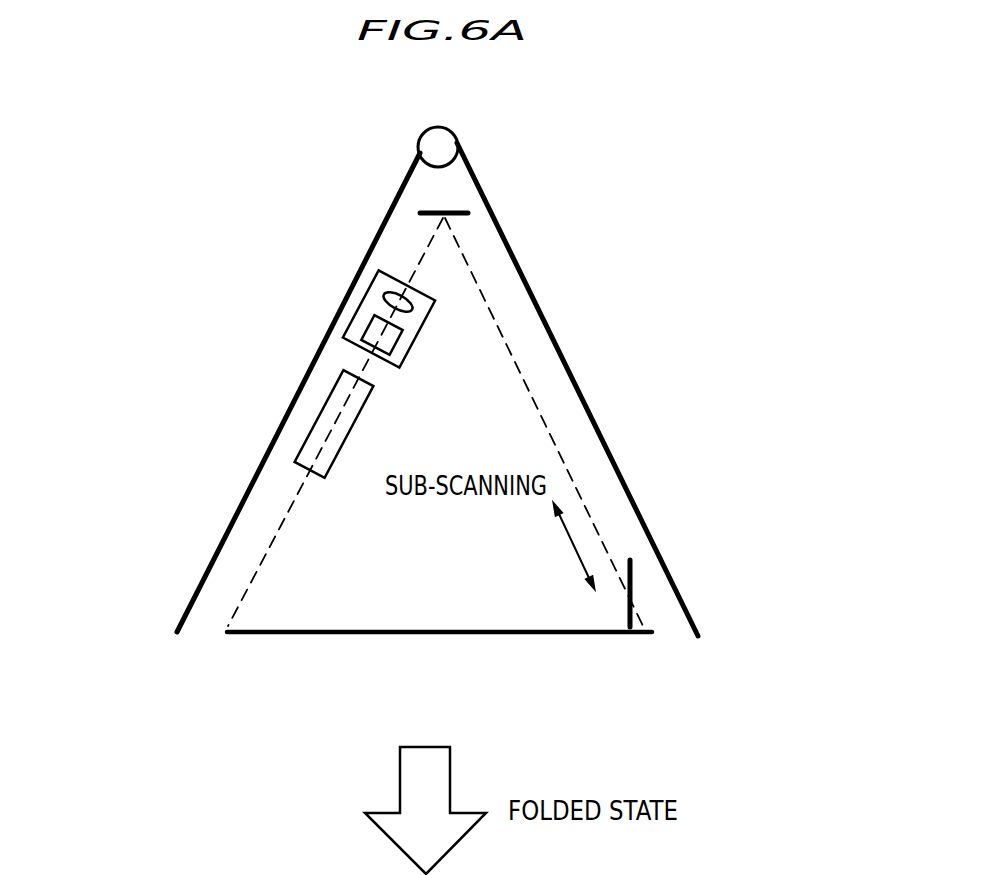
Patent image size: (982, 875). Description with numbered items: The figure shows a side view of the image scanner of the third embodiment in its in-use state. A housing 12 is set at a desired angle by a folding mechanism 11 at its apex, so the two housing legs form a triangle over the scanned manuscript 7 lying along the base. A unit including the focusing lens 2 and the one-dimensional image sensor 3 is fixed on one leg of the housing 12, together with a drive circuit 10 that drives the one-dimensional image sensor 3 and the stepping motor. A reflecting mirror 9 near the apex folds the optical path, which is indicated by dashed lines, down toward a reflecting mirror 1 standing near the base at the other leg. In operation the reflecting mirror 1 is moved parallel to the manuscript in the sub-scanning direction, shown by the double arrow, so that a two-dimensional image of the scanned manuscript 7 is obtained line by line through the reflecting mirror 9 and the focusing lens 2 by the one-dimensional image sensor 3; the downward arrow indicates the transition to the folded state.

The reflecting mirror 1 is at (632, 567).
The focusing lens 2 is at (381, 298).
The one-dimensional image sensor 3 is at (366, 337).
The scanned manuscript 7 is at (447, 633).
The reflecting mirror 9 is at (466, 212).
The drive circuit 10 is at (303, 460).
The folding mechanism 11 is at (452, 146).
The housing 12 is at (576, 383).